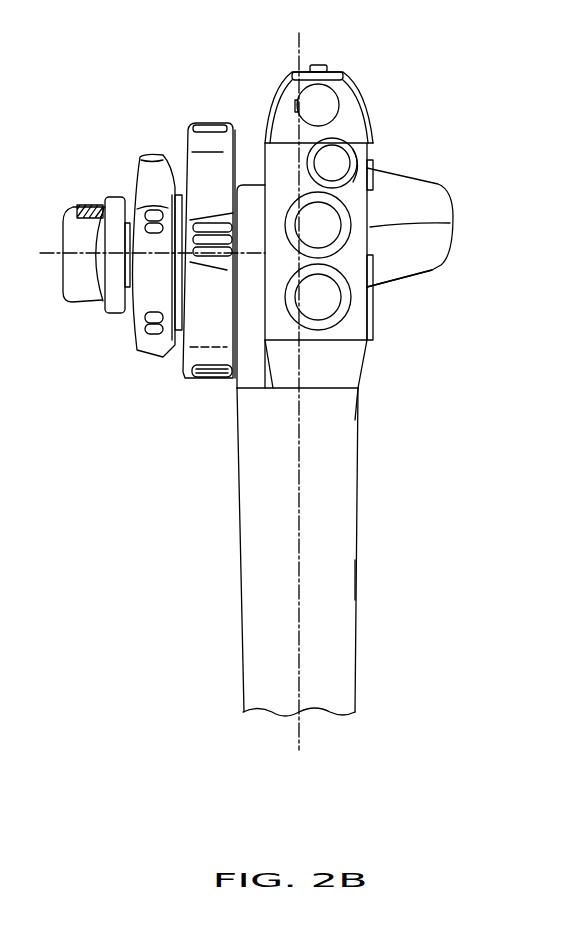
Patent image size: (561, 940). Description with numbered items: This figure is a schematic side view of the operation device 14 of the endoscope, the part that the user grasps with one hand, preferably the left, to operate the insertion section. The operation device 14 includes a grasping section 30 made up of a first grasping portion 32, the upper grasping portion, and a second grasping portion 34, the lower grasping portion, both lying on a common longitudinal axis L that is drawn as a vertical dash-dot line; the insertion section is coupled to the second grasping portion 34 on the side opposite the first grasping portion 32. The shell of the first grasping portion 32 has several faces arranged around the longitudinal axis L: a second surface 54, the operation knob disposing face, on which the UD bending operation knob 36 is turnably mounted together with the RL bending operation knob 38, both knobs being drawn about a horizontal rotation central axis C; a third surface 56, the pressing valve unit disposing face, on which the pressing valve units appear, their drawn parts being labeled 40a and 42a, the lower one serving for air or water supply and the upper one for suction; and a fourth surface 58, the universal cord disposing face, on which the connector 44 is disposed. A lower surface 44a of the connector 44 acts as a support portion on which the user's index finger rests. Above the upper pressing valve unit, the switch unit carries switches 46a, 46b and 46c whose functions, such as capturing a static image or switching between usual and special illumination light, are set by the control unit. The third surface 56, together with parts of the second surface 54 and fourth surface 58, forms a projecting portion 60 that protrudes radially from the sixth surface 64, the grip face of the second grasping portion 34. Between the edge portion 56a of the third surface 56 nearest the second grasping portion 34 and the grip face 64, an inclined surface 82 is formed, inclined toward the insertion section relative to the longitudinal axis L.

The operation device 14 is at (132, 410).
The grasping section 30 is at (365, 392).
The first grasping portion 32 is at (263, 148).
The second grasping portion 34 is at (340, 667).
The UD bending operation knob 36 is at (203, 157).
The RL bending operation knob 38 is at (150, 172).
The suction button 40a is at (325, 296).
The air/water supply button 42a is at (332, 217).
The connector 44 is at (440, 250).
The lower surface of the connector 44a is at (432, 270).
The switch 46a is at (333, 155).
The switch 46b is at (318, 107).
The switch 46c is at (318, 65).
The second surface 54 is at (228, 338).
The third surface 56 is at (277, 157).
The edge portion of the third surface 56a is at (330, 342).
The fourth surface 58 is at (450, 223).
The projecting portion 60 is at (282, 323).
The sixth surface 64 is at (307, 575).
The inclined surface 82 is at (347, 370).
The rotation central axis C is at (55, 258).
The longitudinal axis L is at (302, 732).